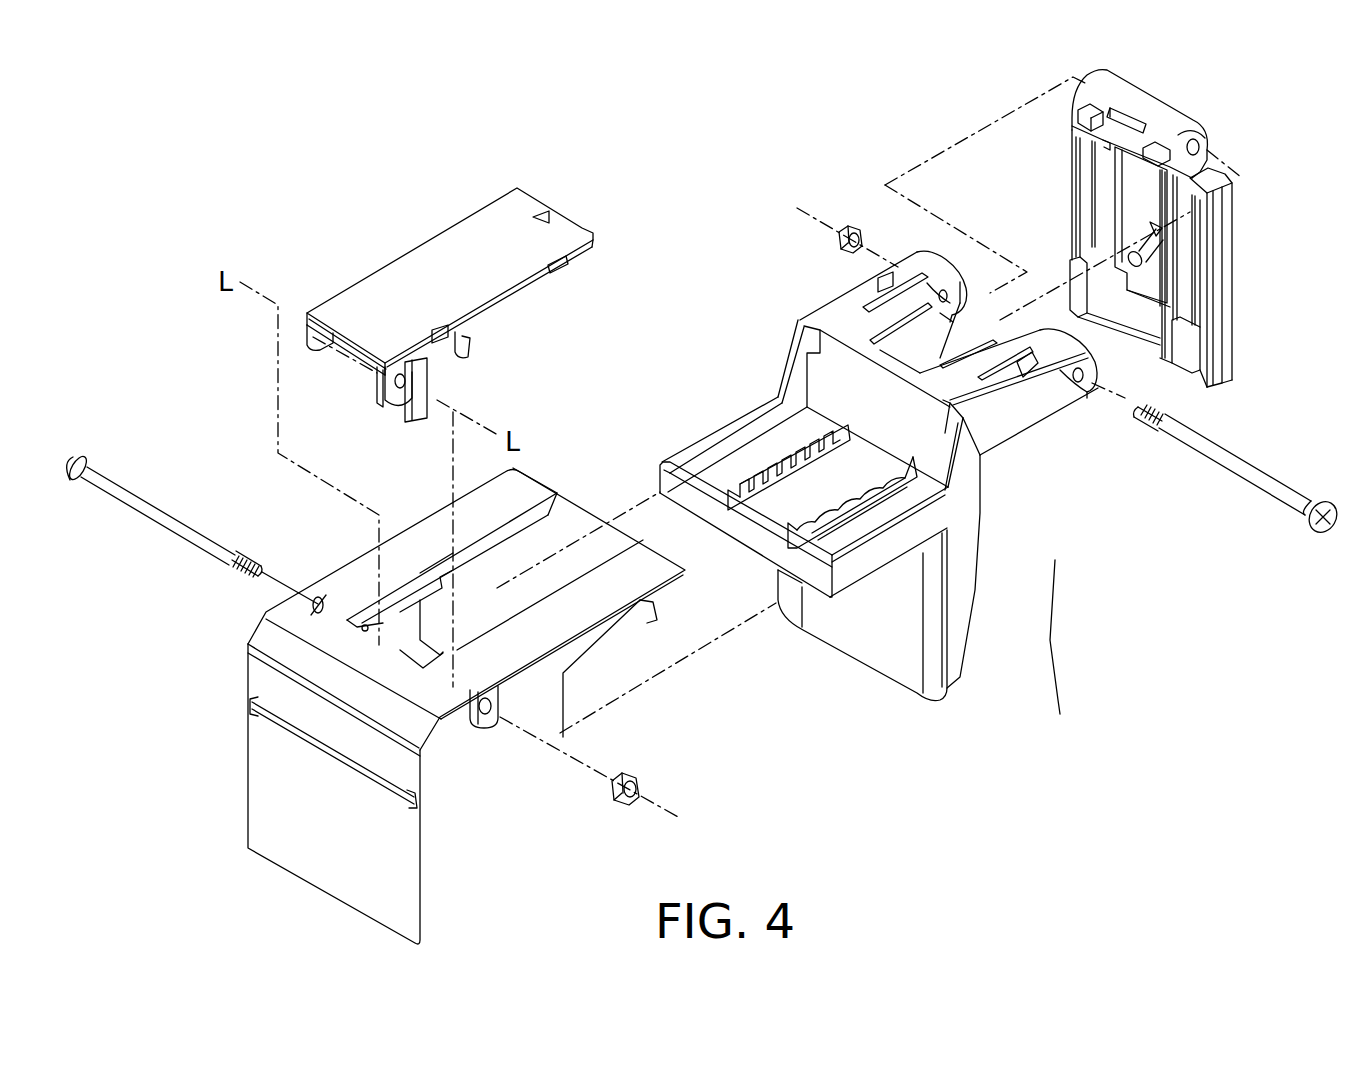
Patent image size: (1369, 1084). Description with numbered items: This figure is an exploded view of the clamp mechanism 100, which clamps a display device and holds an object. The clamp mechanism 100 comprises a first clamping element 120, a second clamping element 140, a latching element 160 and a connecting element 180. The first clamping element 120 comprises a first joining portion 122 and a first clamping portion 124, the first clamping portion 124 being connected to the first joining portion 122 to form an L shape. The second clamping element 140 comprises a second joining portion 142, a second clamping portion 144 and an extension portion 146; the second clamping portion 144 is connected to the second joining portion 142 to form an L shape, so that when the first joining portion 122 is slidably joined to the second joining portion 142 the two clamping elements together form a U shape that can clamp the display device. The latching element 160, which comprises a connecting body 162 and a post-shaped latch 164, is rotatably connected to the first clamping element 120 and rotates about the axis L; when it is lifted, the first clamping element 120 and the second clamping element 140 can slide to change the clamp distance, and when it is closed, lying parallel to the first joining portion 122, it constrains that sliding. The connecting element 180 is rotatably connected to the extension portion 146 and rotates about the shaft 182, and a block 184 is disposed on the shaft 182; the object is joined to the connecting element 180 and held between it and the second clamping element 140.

The clamp mechanism 100 is at (96, 109).
The first clamping element 120 is at (92, 670).
The first joining portion 122 is at (345, 604).
The first clamping portion 124 is at (280, 787).
The second clamping element 140 is at (1092, 760).
The second joining portion 142 is at (870, 563).
The second clamping portion 144 is at (965, 597).
The extension portion 146 is at (1020, 415).
The latching element 160 is at (407, 246).
The connecting body 162 is at (575, 262).
The latch 164 is at (425, 381).
The connecting element 180 is at (1240, 286).
The shaft 182 is at (1197, 147).
The block 184 is at (1131, 120).